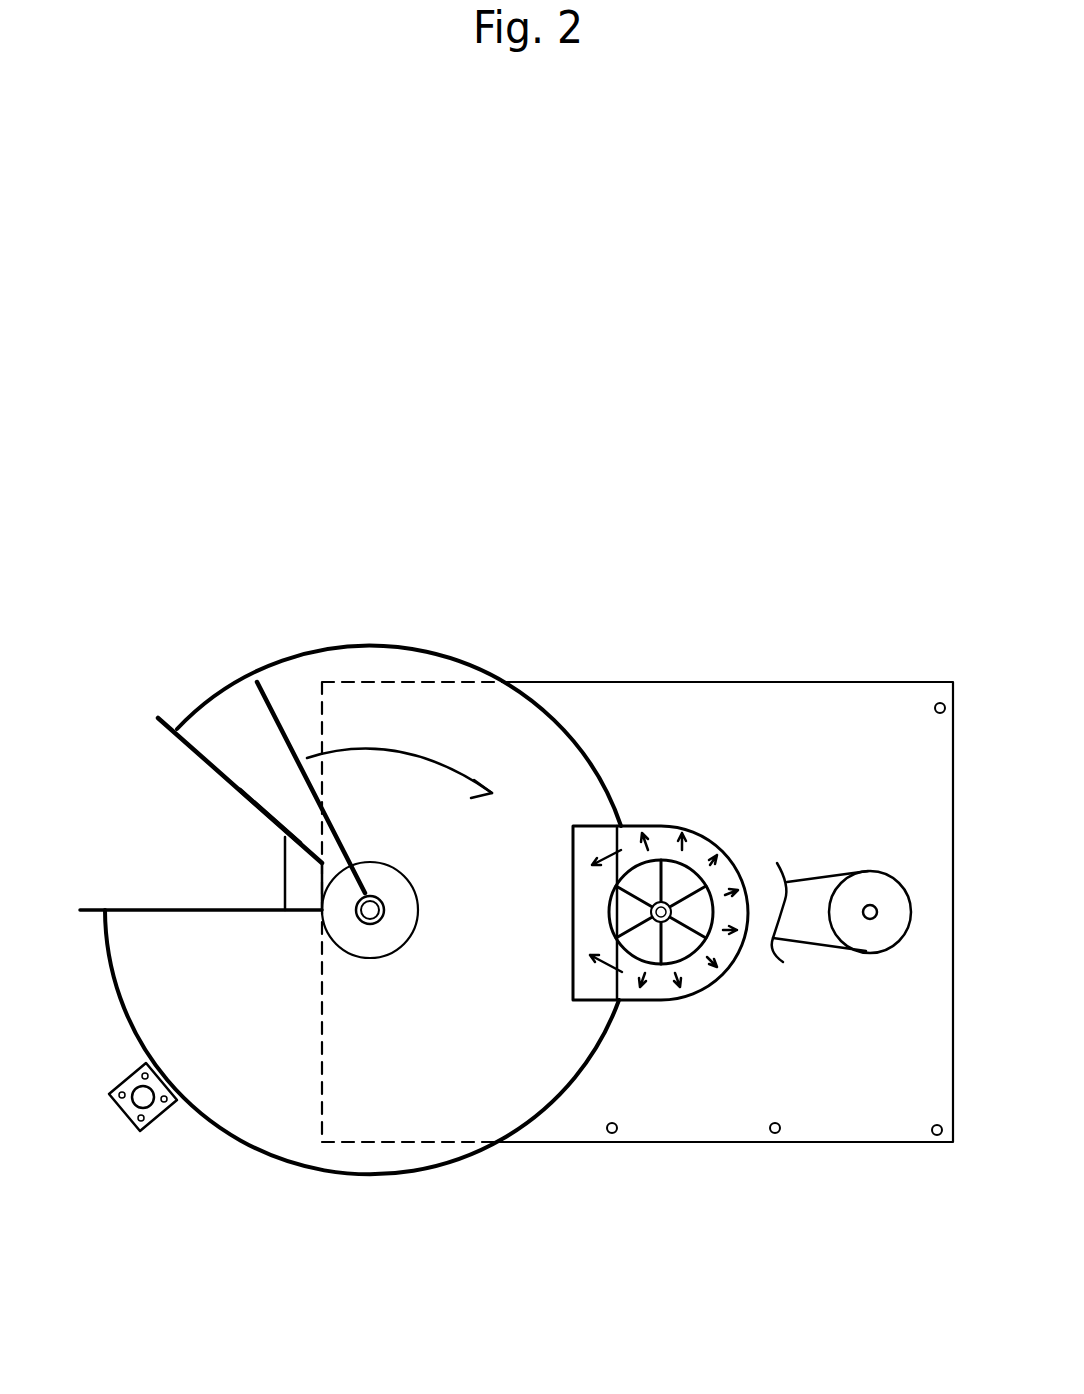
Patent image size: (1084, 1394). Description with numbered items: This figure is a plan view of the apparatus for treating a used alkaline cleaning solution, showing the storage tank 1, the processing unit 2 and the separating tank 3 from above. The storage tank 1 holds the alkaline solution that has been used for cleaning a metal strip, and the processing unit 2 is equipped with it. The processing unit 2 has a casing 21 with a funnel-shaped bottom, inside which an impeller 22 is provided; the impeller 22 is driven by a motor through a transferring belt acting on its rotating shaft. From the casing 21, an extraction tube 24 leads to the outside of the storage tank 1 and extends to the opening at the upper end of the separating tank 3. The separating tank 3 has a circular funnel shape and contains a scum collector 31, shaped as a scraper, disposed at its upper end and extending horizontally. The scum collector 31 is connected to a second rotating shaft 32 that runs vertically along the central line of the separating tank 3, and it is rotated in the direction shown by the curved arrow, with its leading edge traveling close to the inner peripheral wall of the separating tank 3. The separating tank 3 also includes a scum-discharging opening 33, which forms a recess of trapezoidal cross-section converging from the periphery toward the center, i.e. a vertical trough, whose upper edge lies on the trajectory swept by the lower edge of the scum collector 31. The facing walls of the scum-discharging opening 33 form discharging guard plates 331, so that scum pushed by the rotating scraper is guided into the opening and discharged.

The storage tank 1 is at (703, 1142).
The processing unit 2 is at (668, 820).
The casing 21 is at (707, 988).
The impeller 22 is at (708, 883).
The extraction tube 24 is at (592, 837).
The separating tank 3 is at (272, 1158).
The scum collector 31 is at (288, 742).
The second rotating shaft 32 is at (374, 924).
The scum-discharging opening 33 is at (177, 860).
The discharging guard plates 331 is at (252, 803).